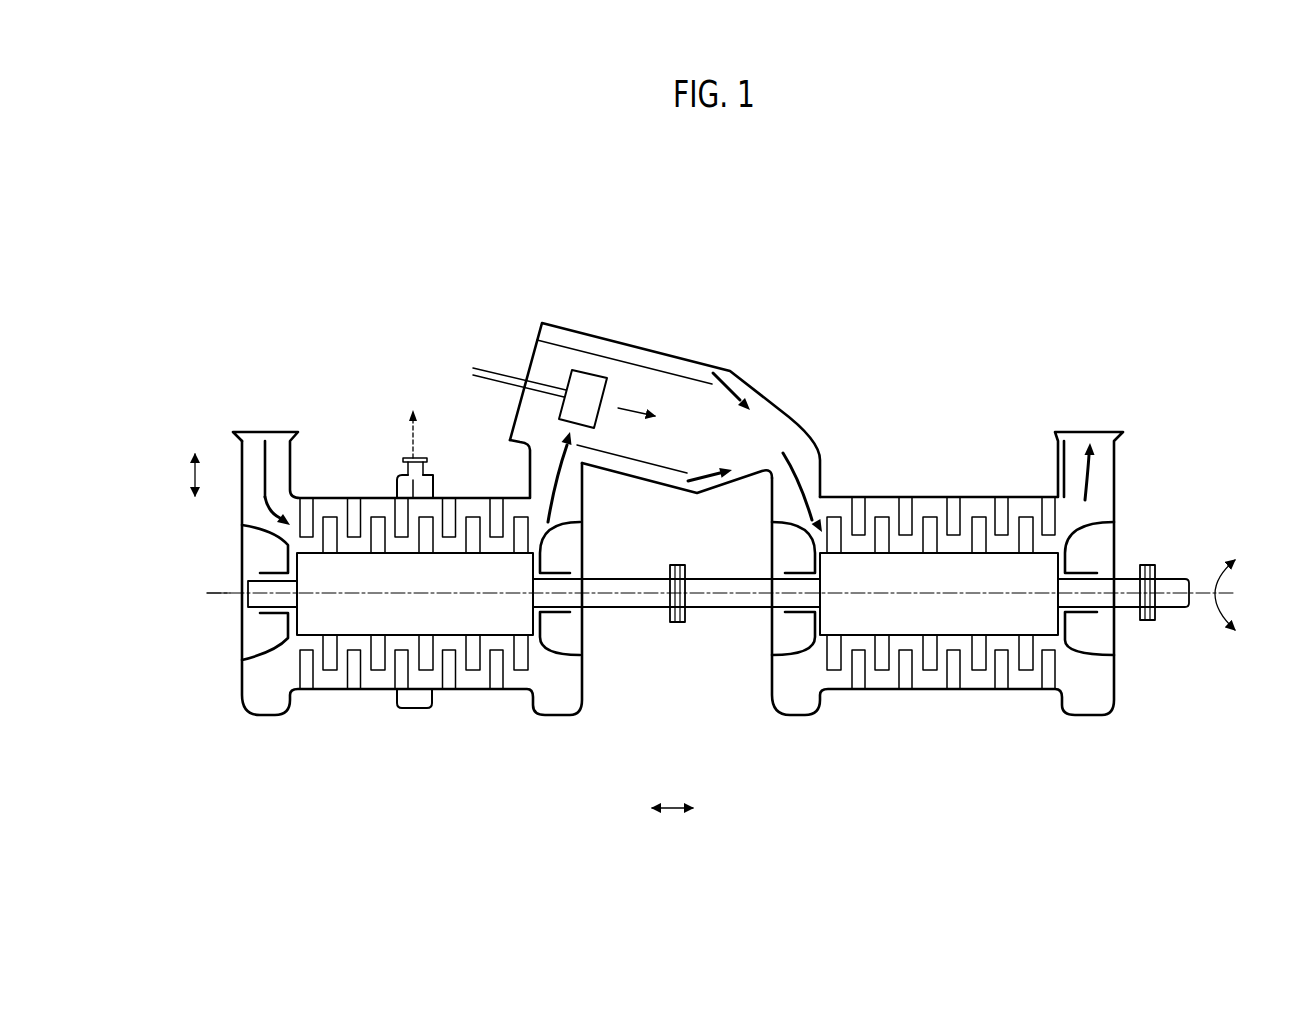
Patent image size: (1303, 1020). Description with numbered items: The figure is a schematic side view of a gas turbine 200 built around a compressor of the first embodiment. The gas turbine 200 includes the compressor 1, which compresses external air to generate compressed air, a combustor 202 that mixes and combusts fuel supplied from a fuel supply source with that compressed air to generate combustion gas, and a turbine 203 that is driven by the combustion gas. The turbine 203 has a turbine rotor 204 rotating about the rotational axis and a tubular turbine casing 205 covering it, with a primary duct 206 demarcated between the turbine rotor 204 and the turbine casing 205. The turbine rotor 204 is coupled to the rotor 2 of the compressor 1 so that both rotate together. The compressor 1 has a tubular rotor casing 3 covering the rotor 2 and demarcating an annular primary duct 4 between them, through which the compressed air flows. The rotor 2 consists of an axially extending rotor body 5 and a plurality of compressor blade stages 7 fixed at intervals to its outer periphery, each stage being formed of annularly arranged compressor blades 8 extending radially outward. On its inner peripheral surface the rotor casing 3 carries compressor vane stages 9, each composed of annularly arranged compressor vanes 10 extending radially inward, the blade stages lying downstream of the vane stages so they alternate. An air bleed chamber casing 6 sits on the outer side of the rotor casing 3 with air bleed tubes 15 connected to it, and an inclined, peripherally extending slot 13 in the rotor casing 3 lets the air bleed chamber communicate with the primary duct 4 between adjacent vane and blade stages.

The compressor 1 is at (278, 730).
The rotor 2 is at (608, 797).
The rotor casing 3 is at (320, 690).
The primary duct 4 is at (340, 510).
The rotor body 5 is at (527, 622).
The air bleed chamber casing 6 is at (427, 488).
The compressor blade stage 7 is at (477, 668).
The compressor blade 8 is at (520, 668).
The compressor vane stage 9 is at (352, 683).
The compressor vane 10 is at (397, 682).
The slot 13 is at (413, 490).
The air bleed tube 15 is at (425, 472).
The gas turbine 200 is at (920, 283).
The combustor 202 is at (627, 338).
The turbine 203 is at (1098, 740).
The turbine rotor 204 is at (898, 635).
The turbine casing 205 is at (978, 692).
The primary duct 206 is at (872, 673).